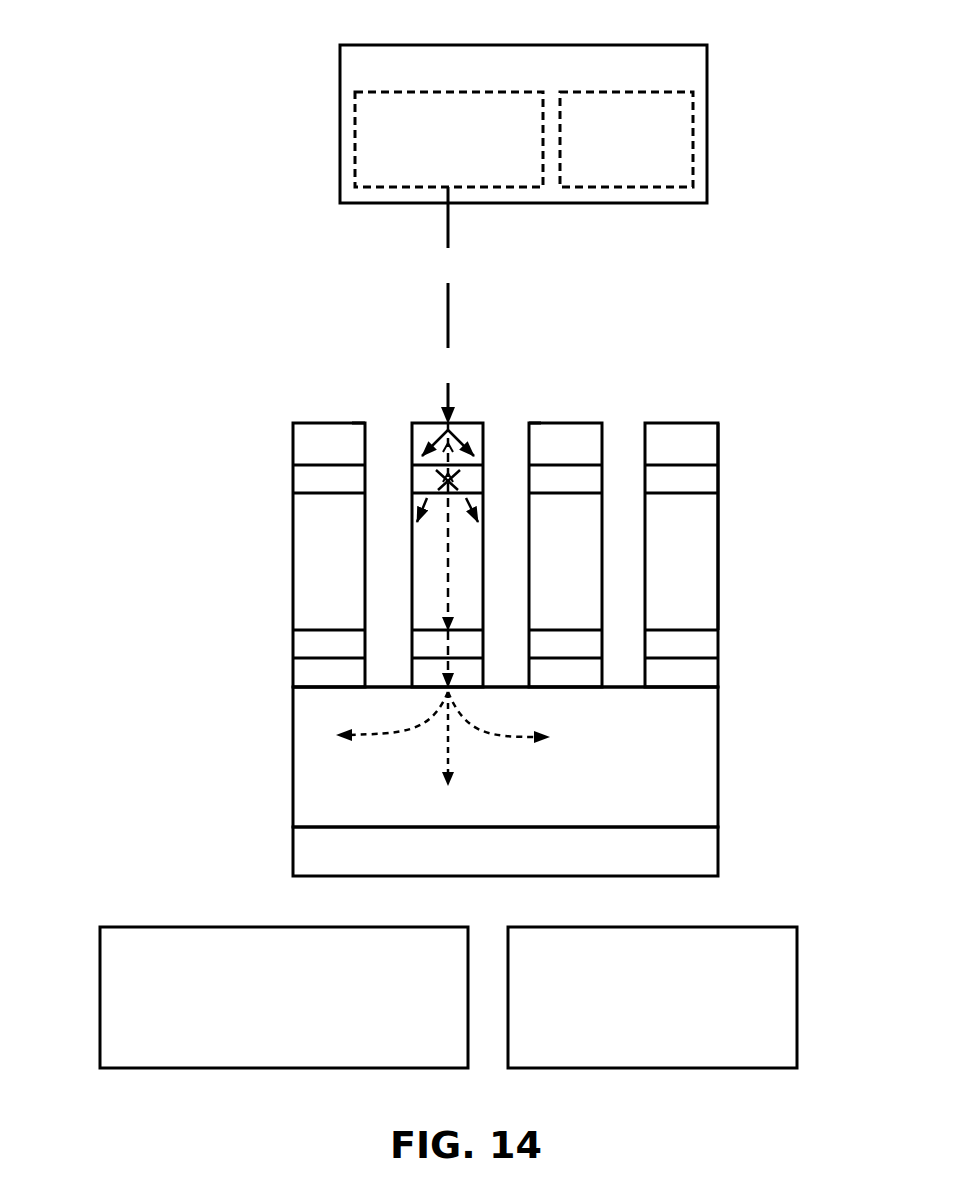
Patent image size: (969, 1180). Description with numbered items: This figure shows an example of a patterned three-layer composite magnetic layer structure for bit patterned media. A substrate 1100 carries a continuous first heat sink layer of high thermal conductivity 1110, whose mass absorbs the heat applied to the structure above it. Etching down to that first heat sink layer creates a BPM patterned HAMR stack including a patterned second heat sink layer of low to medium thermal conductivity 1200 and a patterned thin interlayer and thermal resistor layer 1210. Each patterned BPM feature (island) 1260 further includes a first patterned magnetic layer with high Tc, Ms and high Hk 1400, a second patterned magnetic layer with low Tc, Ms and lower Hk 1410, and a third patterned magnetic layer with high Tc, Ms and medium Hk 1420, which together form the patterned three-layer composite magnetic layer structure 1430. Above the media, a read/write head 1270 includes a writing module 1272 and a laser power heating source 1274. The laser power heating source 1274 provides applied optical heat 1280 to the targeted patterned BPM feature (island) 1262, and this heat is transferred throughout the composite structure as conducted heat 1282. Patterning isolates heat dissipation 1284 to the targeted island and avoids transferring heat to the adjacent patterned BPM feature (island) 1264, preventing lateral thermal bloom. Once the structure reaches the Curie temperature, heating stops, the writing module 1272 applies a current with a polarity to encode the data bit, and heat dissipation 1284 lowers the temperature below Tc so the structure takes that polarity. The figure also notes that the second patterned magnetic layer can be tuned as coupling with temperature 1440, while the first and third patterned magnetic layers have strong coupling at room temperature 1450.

The read/write head 1270 is at (688, 66).
The laser power heating source 1274 is at (367, 160).
The writing module 1272 is at (672, 170).
The applied optical heat 1280 is at (450, 297).
The conducted heat 1282 is at (448, 597).
The heat dissipation 1284 is at (443, 757).
The patterned BPM feature (island) 1260 is at (343, 423).
The targeted patterned BPM feature (island) 1262 is at (428, 423).
The adjacent patterned BPM feature (island) 1264 is at (352, 423).
The patterned magnetic layer No. 3—high (Tc, Ms) medium (Hk) 1420 is at (418, 456).
The patterned magnetic layer No. 2—low (Tc, Ms) lower (Hk) 1410 is at (423, 483).
The patterned magnetic layer No. 1—high (Tc, Ms) high (Hk) 1400 is at (428, 620).
The patterned thin interlayer and thermal resistor layer 1210 is at (425, 648).
The patterned second heat sink layer of low to medium thermal conductivity 1200 is at (425, 678).
The continuous first heat sink layer of high thermal conductivity 1110 is at (700, 780).
The substrate 1100 is at (700, 858).
The patterned 3-layer composite magnetic layer structure 1430 is at (720, 630).
The patterned magnetic layer No. 1 and 3 have strong coupling at room temperature 1450 is at (115, 1020).
The patterned magnetic layer No. 2 can be tuned as coupling with temperature 1440 is at (778, 982).